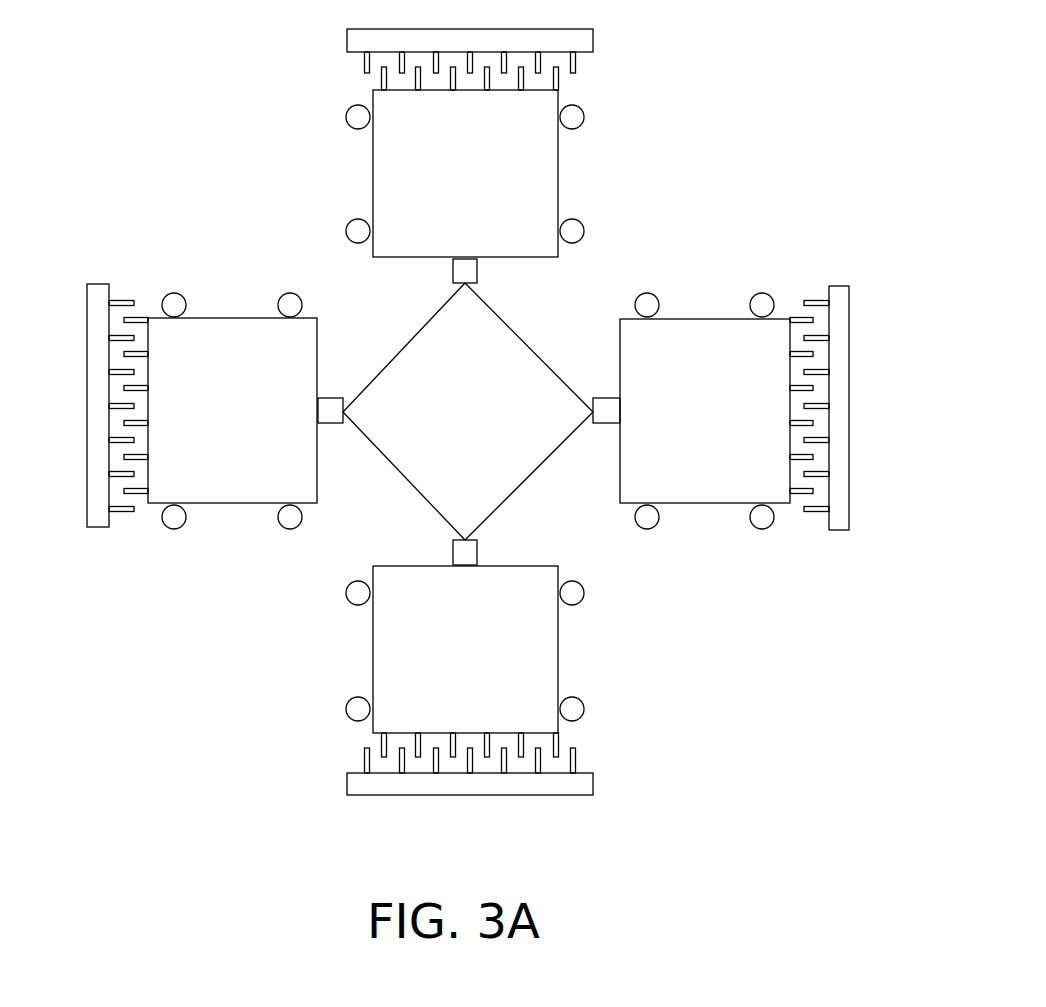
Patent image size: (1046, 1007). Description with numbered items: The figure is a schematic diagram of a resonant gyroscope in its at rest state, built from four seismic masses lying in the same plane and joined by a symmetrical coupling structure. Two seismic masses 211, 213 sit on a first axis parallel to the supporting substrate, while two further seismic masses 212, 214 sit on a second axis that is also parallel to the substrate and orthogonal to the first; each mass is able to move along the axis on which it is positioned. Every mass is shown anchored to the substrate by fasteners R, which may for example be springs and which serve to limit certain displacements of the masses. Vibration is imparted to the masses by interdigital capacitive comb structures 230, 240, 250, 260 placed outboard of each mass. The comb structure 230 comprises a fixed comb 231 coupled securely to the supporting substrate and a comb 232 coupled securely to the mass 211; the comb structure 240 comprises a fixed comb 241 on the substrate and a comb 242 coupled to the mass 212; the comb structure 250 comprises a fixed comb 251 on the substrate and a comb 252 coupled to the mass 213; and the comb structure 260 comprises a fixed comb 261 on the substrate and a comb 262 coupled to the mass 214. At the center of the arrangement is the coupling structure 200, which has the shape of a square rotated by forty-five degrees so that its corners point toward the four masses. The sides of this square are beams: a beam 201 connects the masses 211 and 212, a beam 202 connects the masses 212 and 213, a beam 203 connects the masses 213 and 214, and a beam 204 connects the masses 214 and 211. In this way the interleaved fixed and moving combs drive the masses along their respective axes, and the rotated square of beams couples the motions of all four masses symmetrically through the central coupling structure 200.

The coupling structure 200 is at (478, 412).
The beam 201 is at (393, 355).
The beam 202 is at (533, 352).
The beam 203 is at (533, 475).
The beam 204 is at (396, 474).
The seismic mass 211 is at (237, 488).
The seismic mass 212 is at (548, 168).
The seismic mass 213 is at (697, 492).
The seismic mass 214 is at (540, 653).
The interdigital capacitive comb structure 230 is at (139, 379).
The fixed comb 231 is at (100, 293).
The comb 232 is at (140, 492).
The interdigital capacitive comb structure 240 is at (453, 61).
The fixed comb 241 is at (573, 44).
The comb 242 is at (557, 80).
The interdigital capacitive comb structure 250 is at (791, 387).
The fixed comb 251 is at (837, 297).
The comb 252 is at (792, 493).
The interdigital capacitive comb structure 260 is at (494, 784).
The fixed comb 261 is at (362, 783).
The comb 262 is at (382, 743).
The fasteners R is at (357, 114).